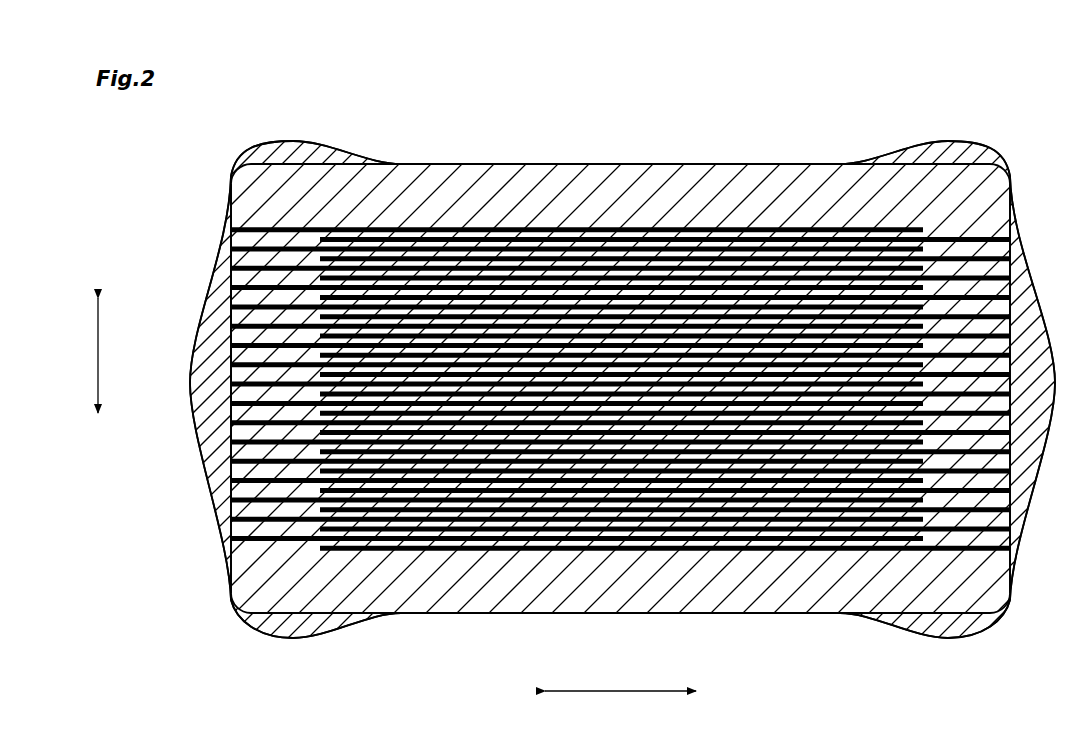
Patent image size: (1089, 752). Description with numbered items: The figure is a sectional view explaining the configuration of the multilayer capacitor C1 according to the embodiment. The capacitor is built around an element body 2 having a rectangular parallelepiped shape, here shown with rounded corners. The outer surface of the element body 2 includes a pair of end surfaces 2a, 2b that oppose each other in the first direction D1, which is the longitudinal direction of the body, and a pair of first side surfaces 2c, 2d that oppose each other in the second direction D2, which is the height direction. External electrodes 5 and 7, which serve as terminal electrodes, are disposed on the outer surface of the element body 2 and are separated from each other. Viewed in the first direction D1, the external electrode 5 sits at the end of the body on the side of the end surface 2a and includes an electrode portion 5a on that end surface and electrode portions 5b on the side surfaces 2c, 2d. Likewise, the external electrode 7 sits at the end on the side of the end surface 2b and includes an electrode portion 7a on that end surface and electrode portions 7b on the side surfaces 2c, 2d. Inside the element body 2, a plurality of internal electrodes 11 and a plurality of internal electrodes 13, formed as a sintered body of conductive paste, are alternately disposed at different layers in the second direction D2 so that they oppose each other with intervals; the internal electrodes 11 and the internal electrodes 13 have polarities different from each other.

The element body 2 is at (548, 165).
The end surface 2a is at (218, 472).
The end surface 2b is at (1003, 432).
The first side surface 2c is at (724, 157).
The first side surface 2d is at (682, 606).
The external electrode 5 is at (195, 288).
The electrode portion 5a is at (196, 391).
The electrode portion 5b is at (312, 141).
The external electrode 7 is at (1034, 305).
The electrode portion 7a is at (1040, 373).
The electrode portion 7b is at (920, 141).
The internal electrode 11 is at (483, 241).
The internal electrode 13 is at (640, 251).
The multilayer capacitor C1 is at (988, 113).
The first direction D1 is at (600, 685).
The second direction D2 is at (95, 347).